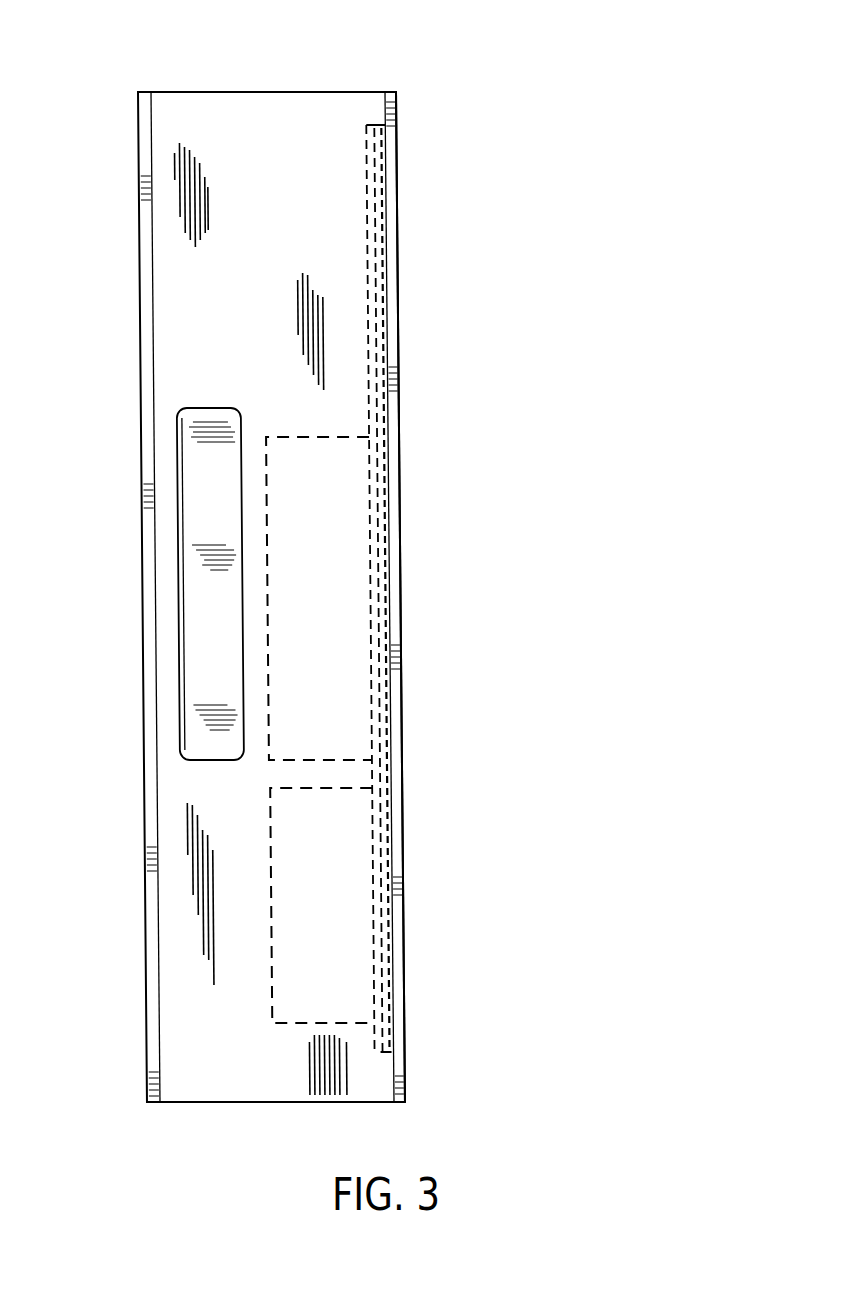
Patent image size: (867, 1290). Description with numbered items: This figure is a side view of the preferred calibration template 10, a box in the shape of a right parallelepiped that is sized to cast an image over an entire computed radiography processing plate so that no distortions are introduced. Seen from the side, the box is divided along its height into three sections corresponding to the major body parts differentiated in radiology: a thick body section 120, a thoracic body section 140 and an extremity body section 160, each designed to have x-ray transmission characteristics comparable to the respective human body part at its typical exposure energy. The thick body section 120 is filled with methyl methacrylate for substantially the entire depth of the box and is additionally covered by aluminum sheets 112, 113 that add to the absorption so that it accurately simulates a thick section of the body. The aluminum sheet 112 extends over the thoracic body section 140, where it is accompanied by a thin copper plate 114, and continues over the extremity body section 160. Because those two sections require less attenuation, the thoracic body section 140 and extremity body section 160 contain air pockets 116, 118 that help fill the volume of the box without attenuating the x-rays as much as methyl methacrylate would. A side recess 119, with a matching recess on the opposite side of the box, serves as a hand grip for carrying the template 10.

The calibration template 10 is at (201, 78).
The aluminum sheet 112 is at (383, 172).
The aluminum sheet 113 is at (368, 338).
The copper plate 114 is at (373, 513).
The air pocket 116 is at (355, 690).
The air pocket 118 is at (348, 868).
The side recess 119 is at (193, 557).
The thick body section 120 is at (445, 266).
The thoracic body section 140 is at (450, 578).
The extremity body section 160 is at (455, 970).